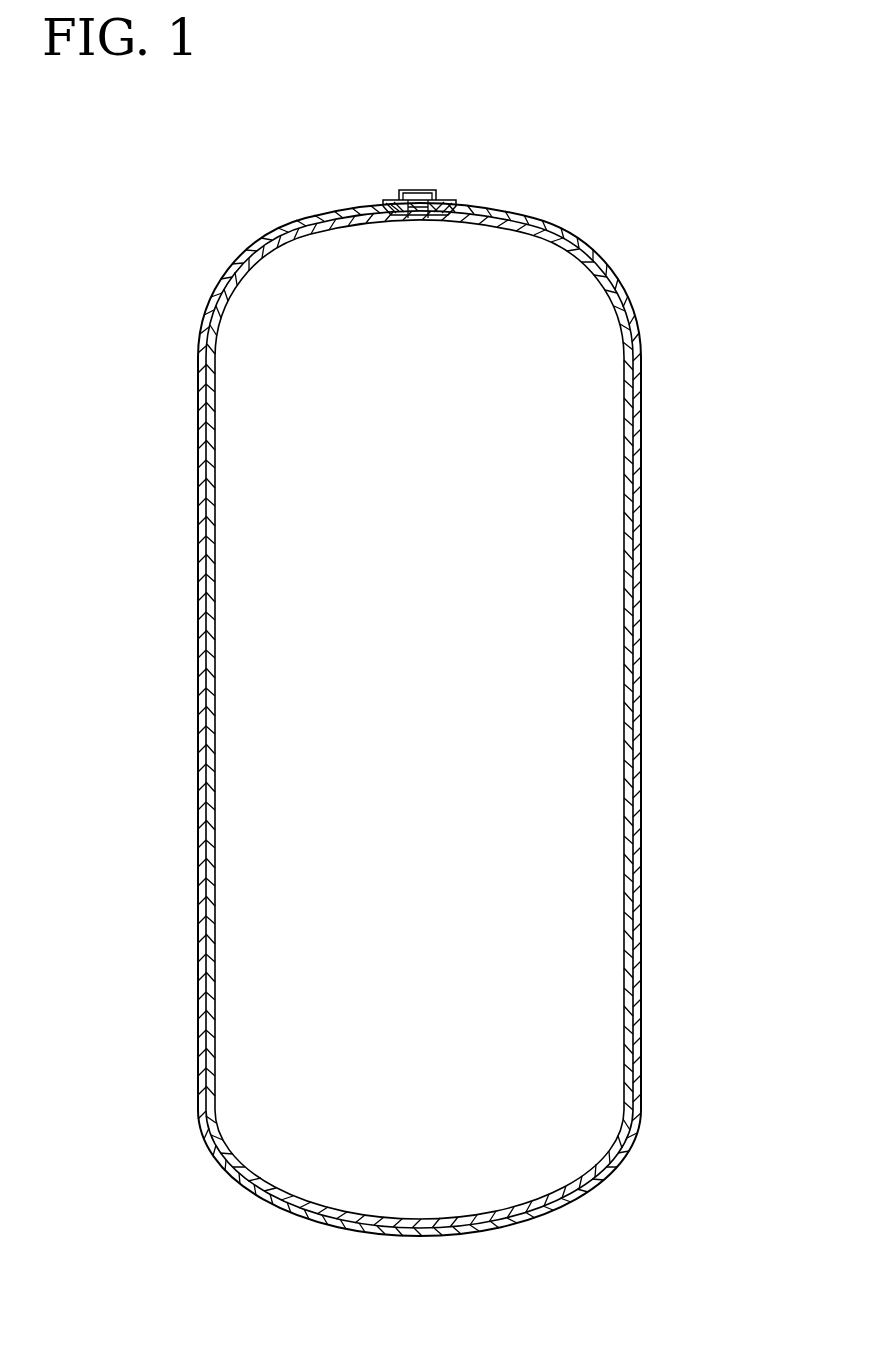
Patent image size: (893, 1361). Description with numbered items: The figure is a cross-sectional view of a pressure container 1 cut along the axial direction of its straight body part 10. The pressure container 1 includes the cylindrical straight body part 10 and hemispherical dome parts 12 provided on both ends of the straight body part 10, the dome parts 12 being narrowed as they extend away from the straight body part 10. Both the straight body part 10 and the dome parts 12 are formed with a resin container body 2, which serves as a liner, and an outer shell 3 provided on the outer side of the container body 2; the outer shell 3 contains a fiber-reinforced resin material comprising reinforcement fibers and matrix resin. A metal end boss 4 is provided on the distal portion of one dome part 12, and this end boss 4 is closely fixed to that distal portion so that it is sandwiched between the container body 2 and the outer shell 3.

The pressure container 1 is at (479, 686).
The container body 2 is at (624, 364).
The outer shell 3 is at (644, 353).
The end boss 4 is at (447, 195).
The straight body part 10 is at (646, 669).
The dome part 12 is at (593, 237).